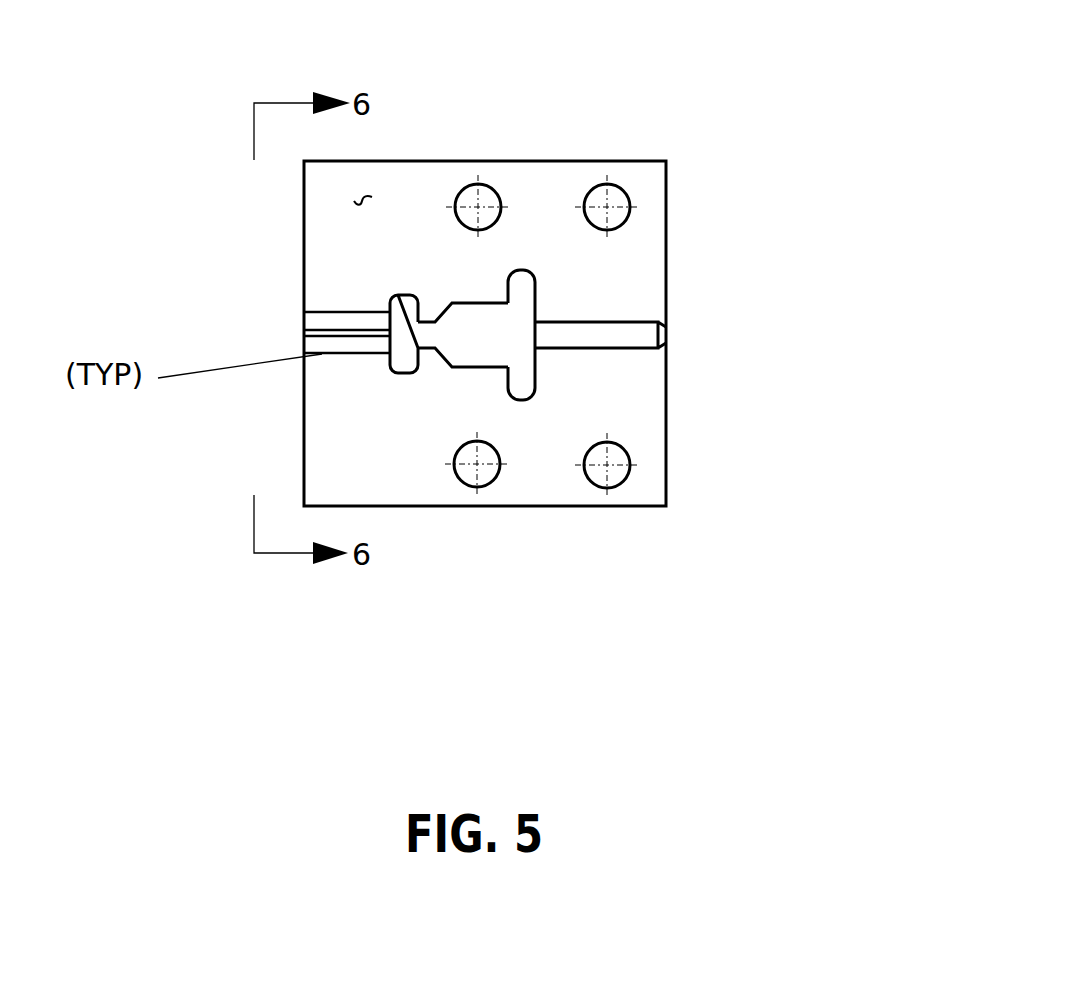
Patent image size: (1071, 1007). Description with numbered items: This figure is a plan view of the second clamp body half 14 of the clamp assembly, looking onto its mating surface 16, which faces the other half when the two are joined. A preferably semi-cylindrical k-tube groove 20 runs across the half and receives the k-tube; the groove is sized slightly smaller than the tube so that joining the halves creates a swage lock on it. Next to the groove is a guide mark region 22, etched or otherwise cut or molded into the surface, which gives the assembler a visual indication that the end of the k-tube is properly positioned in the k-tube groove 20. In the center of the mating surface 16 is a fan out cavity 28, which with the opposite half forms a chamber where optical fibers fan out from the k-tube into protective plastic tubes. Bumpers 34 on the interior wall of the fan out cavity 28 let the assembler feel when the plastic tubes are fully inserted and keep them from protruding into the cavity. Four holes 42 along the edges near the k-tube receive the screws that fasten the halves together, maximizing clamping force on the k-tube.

The clamp body half 14 is at (500, 119).
The mating surface 16 is at (355, 202).
The clearance holes 42 is at (625, 195).
The bumpers 34 is at (400, 298).
The fan out cavity 28 is at (455, 364).
The guide mark region 22 is at (538, 283).
The k-tube groove 20 is at (628, 352).